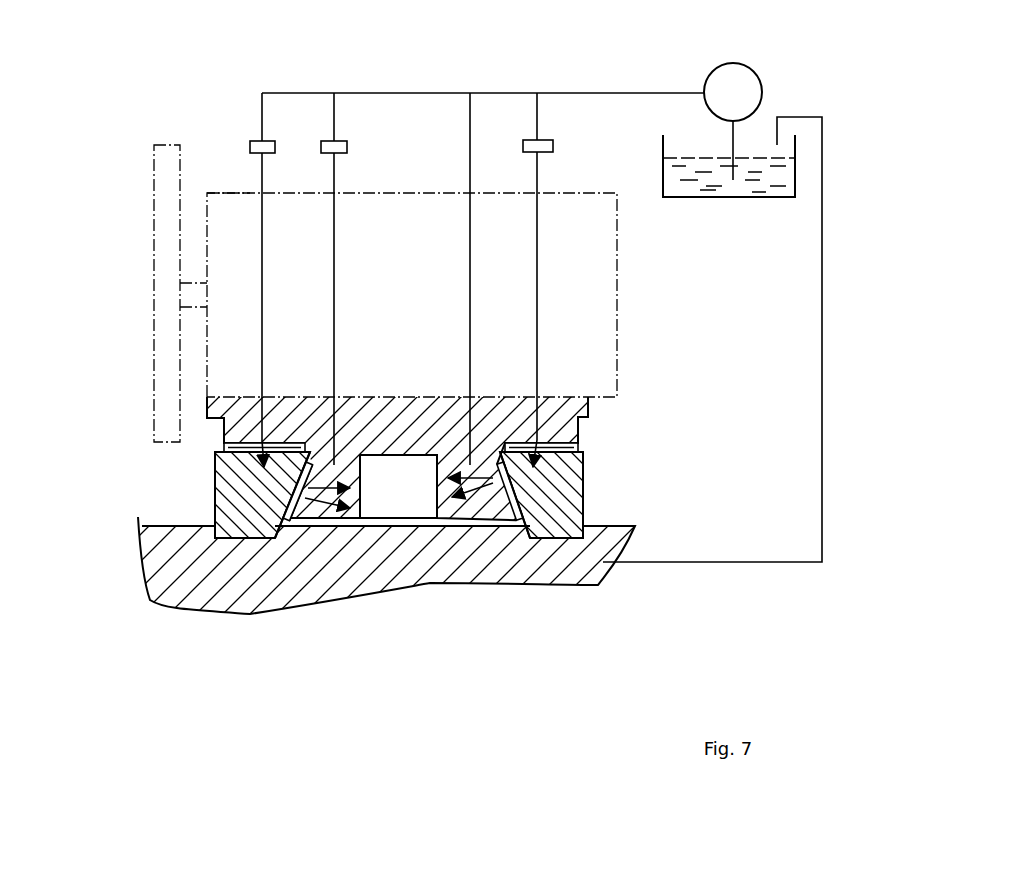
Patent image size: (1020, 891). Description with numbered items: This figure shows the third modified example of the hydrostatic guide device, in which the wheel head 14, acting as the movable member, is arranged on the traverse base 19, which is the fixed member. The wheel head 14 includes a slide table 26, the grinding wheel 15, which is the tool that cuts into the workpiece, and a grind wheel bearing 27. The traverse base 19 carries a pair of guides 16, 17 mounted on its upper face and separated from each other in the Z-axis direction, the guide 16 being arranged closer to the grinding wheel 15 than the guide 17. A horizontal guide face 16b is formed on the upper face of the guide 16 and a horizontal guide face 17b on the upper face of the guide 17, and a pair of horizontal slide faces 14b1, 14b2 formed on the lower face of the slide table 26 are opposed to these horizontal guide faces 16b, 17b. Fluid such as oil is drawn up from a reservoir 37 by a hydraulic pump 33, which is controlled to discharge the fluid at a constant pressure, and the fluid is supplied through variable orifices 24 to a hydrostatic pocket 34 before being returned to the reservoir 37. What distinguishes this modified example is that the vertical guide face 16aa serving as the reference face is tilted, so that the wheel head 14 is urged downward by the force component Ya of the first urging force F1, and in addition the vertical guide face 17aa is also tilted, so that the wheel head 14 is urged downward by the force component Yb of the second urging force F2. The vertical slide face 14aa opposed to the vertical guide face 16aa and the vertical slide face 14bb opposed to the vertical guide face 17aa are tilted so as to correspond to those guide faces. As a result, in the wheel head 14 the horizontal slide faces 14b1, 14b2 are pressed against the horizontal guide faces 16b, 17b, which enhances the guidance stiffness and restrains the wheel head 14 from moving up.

The wheel head 14 is at (660, 278).
The grinding wheel 15 is at (153, 172).
The guide 16 is at (215, 486).
The guide 17 is at (622, 482).
The traverse base 19 is at (595, 548).
The variable orifices 24 is at (258, 140).
The slide table 26 is at (593, 412).
The grind wheel bearing 27 is at (222, 198).
The hydraulic pump 33 is at (718, 78).
The hydrostatic pocket 34 is at (312, 520).
The reservoir 37 is at (663, 163).
The vertical slide face 14aa is at (296, 442).
The vertical slide face 14bb is at (520, 485).
The horizontal slide face 14b1 is at (217, 455).
The horizontal slide face 14b2 is at (583, 455).
The vertical guide face 16aa is at (288, 522).
The horizontal guide face 16b is at (287, 443).
The vertical guide face 17aa is at (486, 505).
The horizontal guide face 17b is at (549, 450).
The first urging force F1 is at (338, 473).
The second urging force F2 is at (450, 475).
The force component Ya is at (250, 443).
The force component Yb is at (512, 447).